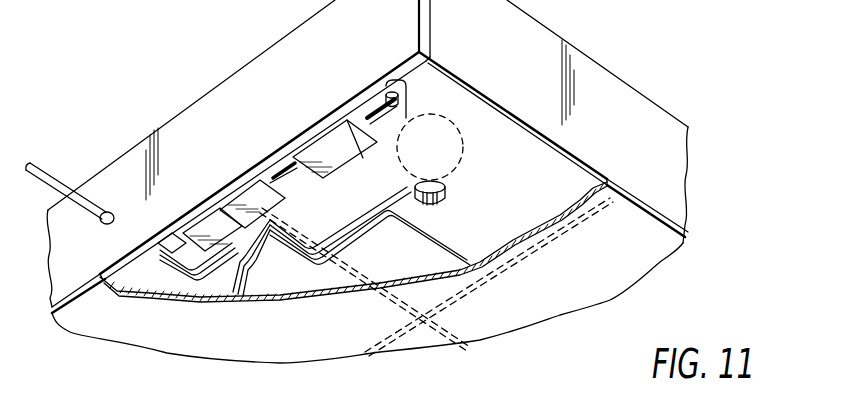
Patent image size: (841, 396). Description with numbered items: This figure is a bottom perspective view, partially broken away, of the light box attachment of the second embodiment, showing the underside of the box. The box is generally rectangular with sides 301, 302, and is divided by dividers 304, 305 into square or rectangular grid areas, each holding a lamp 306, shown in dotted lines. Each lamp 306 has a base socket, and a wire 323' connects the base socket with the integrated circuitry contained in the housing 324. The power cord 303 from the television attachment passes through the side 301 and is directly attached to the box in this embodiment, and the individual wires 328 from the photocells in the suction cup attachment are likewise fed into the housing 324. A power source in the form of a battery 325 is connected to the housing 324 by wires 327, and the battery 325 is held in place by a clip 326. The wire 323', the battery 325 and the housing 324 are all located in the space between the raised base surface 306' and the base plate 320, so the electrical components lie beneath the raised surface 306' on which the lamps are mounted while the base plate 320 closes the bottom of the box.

The side 301 is at (271, 46).
The side 302 is at (618, 141).
The power cord 303 is at (62, 182).
The divider 304 is at (470, 300).
The divider 305 is at (445, 335).
The lamp 306 is at (447, 147).
The raised base surface 306' is at (473, 191).
The base plate 320 is at (650, 260).
The wire 323' is at (255, 273).
The housing 324 is at (217, 212).
The battery 325 is at (343, 132).
The clip 326 is at (393, 86).
The wires 327 is at (277, 165).
The wires 328 is at (180, 280).